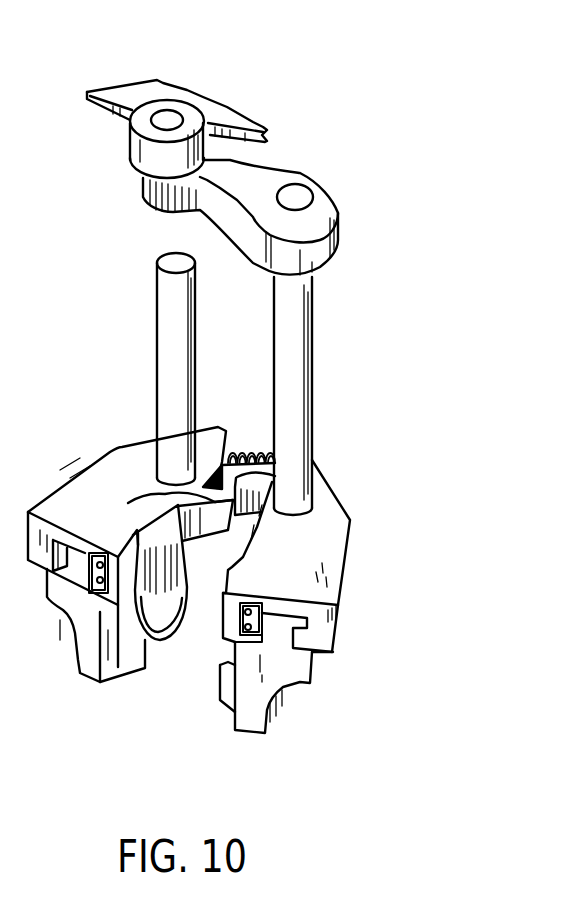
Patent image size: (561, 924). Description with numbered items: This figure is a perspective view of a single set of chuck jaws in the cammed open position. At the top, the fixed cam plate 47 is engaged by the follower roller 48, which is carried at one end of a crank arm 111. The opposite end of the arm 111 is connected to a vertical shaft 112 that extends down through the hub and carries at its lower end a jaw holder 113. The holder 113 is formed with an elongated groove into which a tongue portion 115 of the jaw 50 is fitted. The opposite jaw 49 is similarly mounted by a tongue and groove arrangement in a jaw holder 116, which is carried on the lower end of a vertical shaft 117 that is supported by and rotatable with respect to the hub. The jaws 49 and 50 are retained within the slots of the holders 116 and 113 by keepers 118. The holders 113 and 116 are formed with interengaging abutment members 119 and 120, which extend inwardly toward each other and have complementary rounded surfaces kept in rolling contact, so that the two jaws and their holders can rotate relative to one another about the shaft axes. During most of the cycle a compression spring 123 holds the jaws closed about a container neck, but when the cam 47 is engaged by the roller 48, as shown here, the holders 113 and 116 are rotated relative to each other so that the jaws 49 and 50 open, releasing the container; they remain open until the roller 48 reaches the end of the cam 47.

The cam plate 47 is at (178, 85).
The follower roller 48 is at (188, 117).
The jaw 49 is at (90, 663).
The jaw 50 is at (255, 727).
The crank arm 111 is at (280, 173).
The vertical shaft 112 is at (313, 378).
The jaw holder 113 is at (327, 590).
The tongue portion 115 is at (303, 627).
The jaw holder 116 is at (103, 473).
The vertical shaft 117 is at (165, 353).
The keeper 118 is at (88, 579).
The abutment member 119 is at (275, 476).
The abutment member 120 is at (135, 502).
The compression spring 123 is at (250, 443).